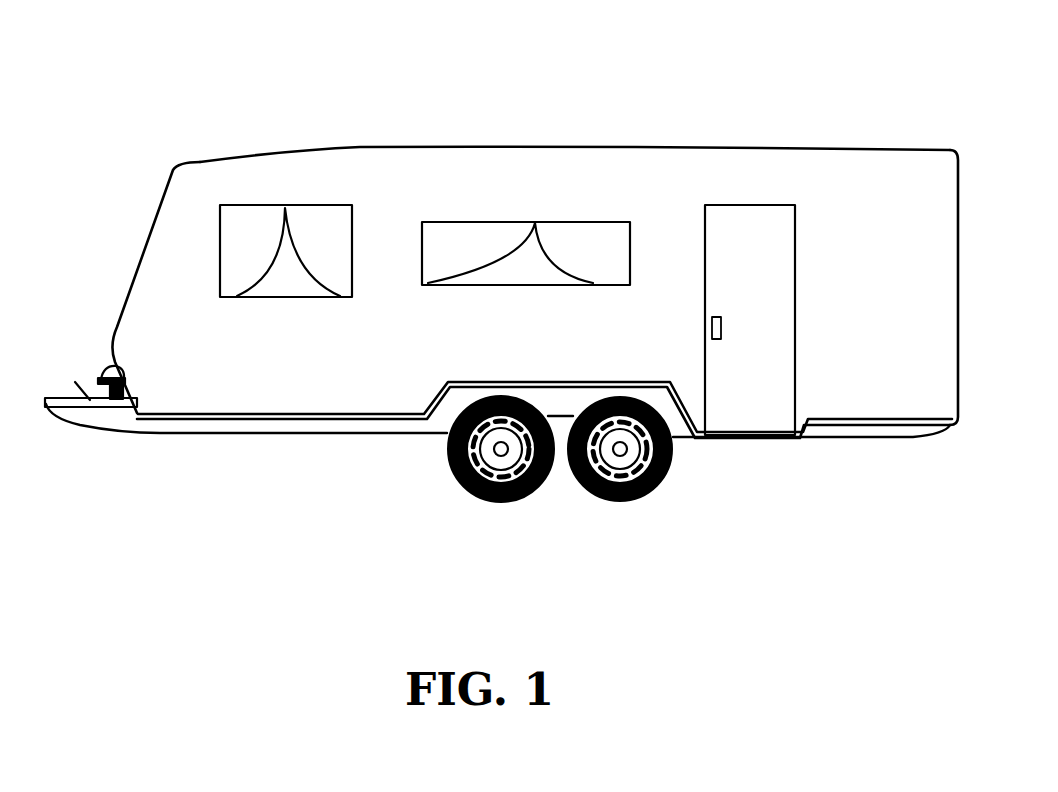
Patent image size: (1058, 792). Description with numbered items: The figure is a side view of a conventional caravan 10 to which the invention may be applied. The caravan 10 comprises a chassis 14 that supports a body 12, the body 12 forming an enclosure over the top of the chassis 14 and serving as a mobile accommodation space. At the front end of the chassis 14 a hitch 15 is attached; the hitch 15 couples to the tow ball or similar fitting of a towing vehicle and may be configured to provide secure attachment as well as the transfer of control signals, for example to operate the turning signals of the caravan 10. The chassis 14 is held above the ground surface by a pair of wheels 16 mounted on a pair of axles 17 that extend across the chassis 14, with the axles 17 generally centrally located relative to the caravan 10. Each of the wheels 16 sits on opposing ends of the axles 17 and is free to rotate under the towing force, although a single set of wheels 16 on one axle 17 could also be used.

The caravan 10 is at (535, 237).
The body 12 is at (423, 148).
The chassis 14 is at (353, 427).
The hitch 15 is at (115, 410).
The wheels 16 is at (470, 492).
The axles 17 is at (501, 449).